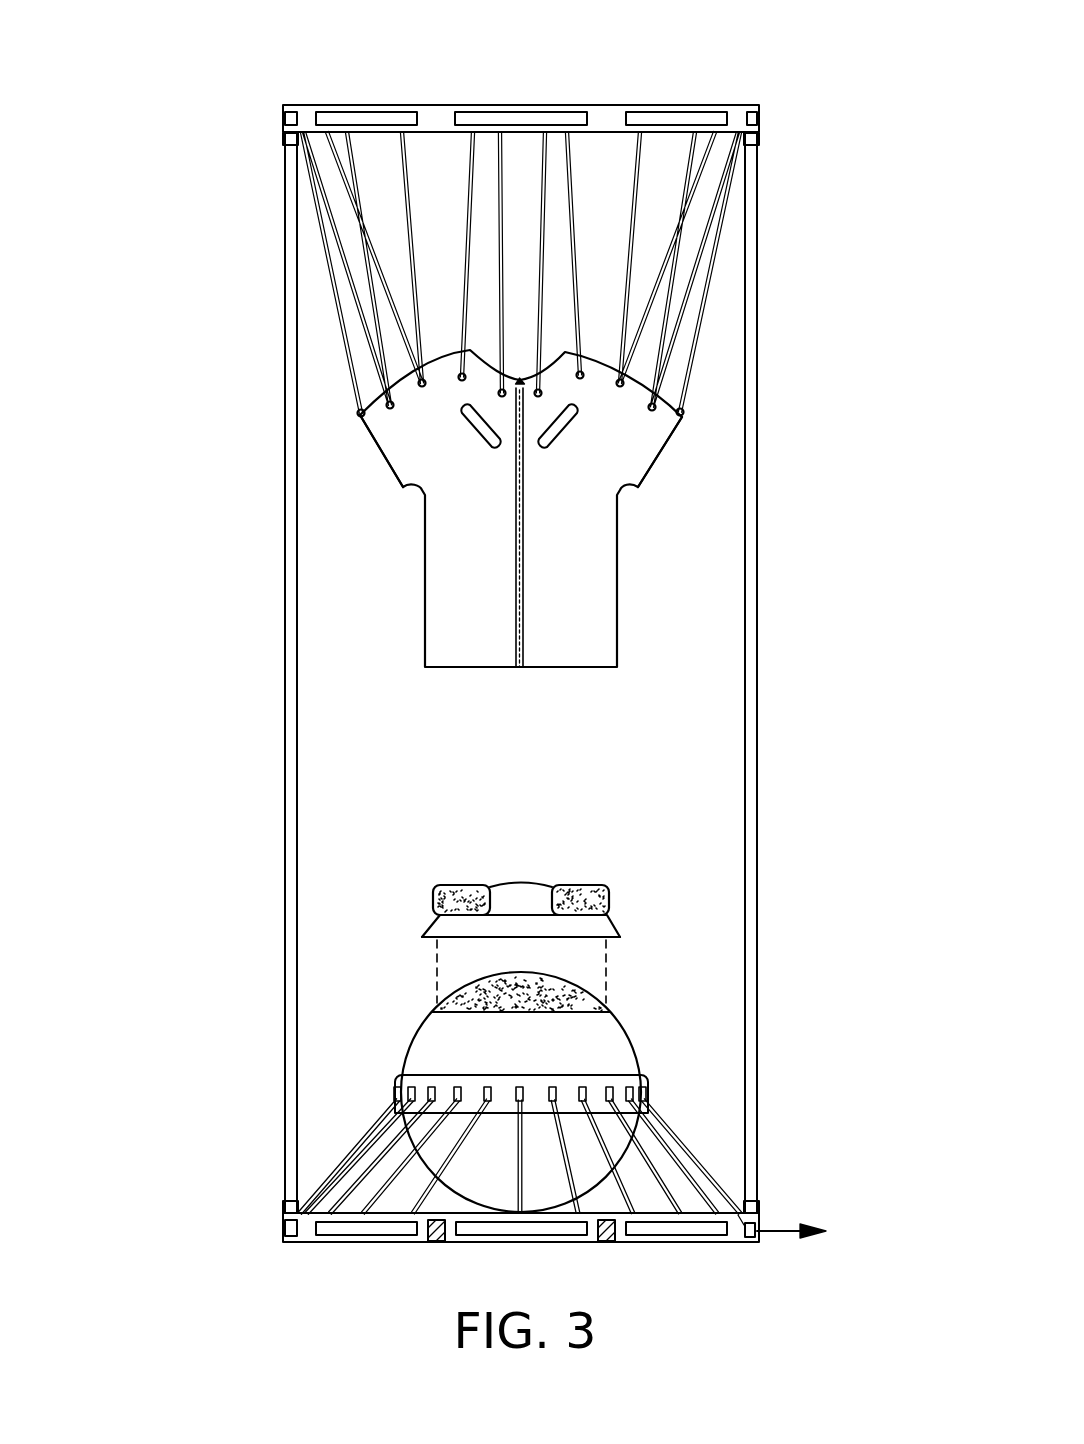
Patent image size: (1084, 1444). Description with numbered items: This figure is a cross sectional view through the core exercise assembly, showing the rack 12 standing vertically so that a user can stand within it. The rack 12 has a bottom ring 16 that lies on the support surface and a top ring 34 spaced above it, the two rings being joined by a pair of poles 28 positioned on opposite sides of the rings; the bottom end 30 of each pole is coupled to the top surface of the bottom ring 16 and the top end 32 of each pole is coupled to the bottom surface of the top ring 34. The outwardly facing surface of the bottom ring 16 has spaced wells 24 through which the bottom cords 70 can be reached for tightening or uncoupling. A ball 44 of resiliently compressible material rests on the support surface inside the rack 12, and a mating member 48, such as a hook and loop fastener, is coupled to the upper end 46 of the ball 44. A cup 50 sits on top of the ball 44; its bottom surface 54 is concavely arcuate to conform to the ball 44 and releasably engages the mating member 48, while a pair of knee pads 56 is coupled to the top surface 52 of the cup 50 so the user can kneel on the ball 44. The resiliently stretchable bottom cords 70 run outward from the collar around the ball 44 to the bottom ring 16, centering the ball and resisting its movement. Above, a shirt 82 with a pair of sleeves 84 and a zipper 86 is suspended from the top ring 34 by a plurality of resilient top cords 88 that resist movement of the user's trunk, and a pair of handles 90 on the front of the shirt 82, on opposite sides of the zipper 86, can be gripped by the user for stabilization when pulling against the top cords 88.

The rack 12 is at (200, 351).
The bottom ring 16 is at (313, 1243).
The wells 24 is at (487, 1227).
The poles 28 is at (290, 785).
The bottom end 30 is at (288, 1218).
The top end 32 is at (285, 118).
The top ring 34 is at (758, 108).
The ball 44 is at (430, 1050).
The upper end 46 is at (482, 978).
The mating member 48 is at (560, 1013).
The cup 50 is at (612, 925).
The top surface 52 is at (523, 909).
The bottom surface 54 is at (563, 937).
The knee pads 56 is at (437, 890).
The bottom cords 70 is at (357, 1167).
The shirt 82 is at (617, 605).
The sleeves 84 is at (358, 410).
The zipper 86 is at (517, 590).
The top cords 88 is at (546, 185).
The handles 90 is at (562, 428).